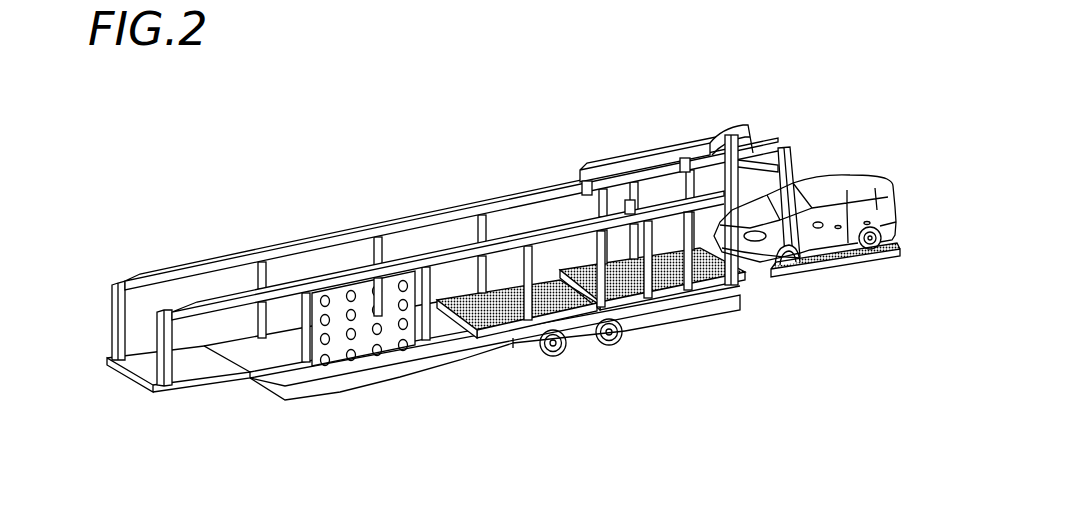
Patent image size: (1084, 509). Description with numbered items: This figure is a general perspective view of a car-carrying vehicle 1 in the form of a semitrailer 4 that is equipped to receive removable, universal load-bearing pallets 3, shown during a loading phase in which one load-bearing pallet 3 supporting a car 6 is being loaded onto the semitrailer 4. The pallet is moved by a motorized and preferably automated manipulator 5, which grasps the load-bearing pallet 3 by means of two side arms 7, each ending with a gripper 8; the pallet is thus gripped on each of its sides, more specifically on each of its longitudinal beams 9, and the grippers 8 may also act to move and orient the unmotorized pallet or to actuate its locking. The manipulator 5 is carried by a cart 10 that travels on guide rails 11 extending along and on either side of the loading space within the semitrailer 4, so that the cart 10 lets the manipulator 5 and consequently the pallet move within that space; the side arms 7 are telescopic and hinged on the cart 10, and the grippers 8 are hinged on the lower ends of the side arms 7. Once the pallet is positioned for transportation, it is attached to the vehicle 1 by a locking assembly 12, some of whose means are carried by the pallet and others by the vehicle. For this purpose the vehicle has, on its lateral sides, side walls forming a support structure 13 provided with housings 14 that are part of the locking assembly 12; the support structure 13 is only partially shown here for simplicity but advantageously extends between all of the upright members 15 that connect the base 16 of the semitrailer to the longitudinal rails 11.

The car-carrying vehicle 1 is at (196, 165).
The semitrailer 4 is at (501, 263).
The load-bearing pallet 3 is at (506, 334).
The manipulator 5 is at (801, 152).
The car 6 is at (841, 182).
The side arms 7 is at (791, 171).
The gripper 8 is at (785, 273).
The longitudinal beams 9 is at (820, 270).
The cart 10 is at (606, 147).
The guide rails 11 is at (426, 255).
The locking assembly 12 is at (310, 365).
The support structure 13 is at (391, 337).
The housings 14 is at (351, 363).
The upright members 15 is at (263, 276).
The base 16 is at (470, 374).